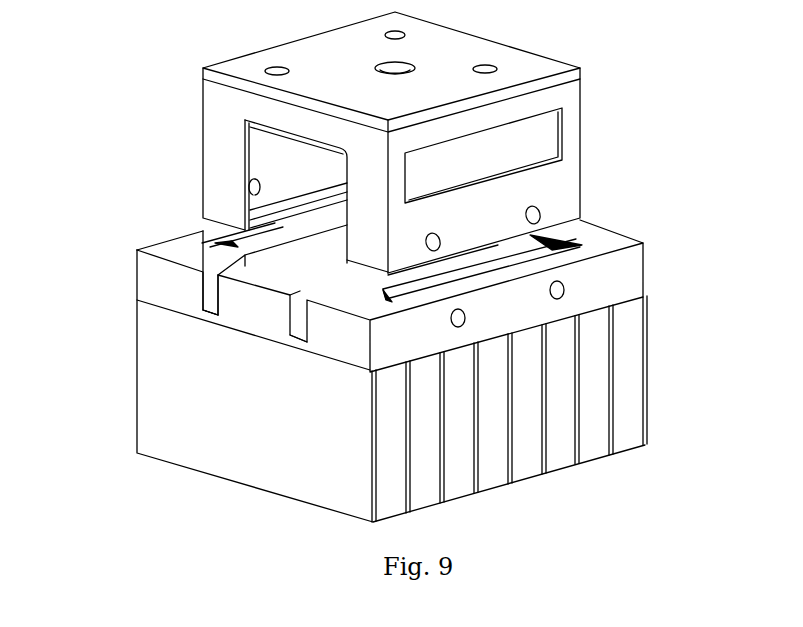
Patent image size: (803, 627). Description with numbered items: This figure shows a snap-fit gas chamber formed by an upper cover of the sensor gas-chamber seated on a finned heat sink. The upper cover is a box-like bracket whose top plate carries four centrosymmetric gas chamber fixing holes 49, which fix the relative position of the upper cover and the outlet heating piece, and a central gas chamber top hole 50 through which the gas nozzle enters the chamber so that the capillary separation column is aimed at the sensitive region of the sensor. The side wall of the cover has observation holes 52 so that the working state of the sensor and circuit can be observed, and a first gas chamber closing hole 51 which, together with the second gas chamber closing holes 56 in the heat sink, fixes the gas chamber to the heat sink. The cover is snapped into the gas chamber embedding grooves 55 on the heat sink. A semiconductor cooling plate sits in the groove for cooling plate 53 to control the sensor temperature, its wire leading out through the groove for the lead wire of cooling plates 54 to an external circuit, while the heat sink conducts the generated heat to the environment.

The gas chamber fixing holes 49 is at (288, 67).
The gas chamber top hole 50 is at (405, 64).
The first gas chamber closing hole 51 is at (437, 238).
The observation holes 52 is at (528, 146).
The groove for cooling plate 53 is at (330, 243).
The groove for the lead wire of cooling plates 54 is at (210, 288).
The gas chamber embedding grooves 55 is at (532, 237).
The second gas chamber closing holes 56 is at (565, 289).